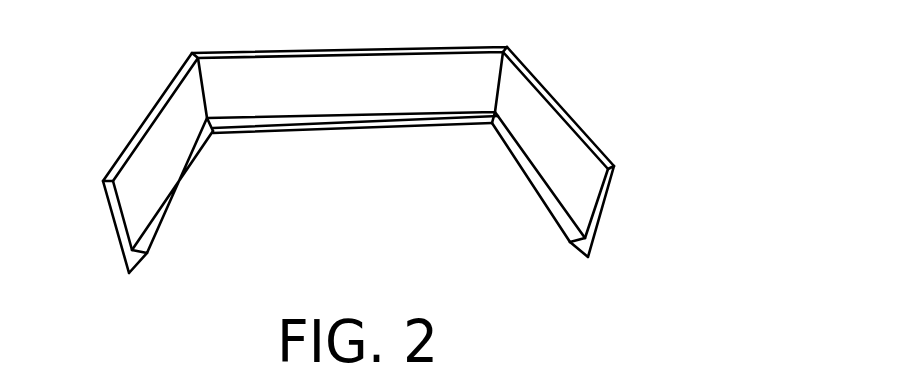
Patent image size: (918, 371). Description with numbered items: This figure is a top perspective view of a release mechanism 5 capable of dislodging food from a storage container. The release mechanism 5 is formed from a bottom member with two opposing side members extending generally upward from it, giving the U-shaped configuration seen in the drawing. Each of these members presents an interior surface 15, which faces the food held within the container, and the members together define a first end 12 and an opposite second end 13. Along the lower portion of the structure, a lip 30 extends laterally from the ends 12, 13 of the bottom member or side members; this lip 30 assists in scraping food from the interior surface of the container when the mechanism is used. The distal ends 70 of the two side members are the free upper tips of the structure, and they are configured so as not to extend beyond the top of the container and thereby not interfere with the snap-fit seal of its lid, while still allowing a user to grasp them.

The release mechanism 5 is at (367, 141).
The first end 12 is at (238, 52).
The second end 13 is at (503, 145).
The interior surface 15 is at (332, 70).
The lip 30 is at (338, 122).
The distal ends 70 is at (108, 208).